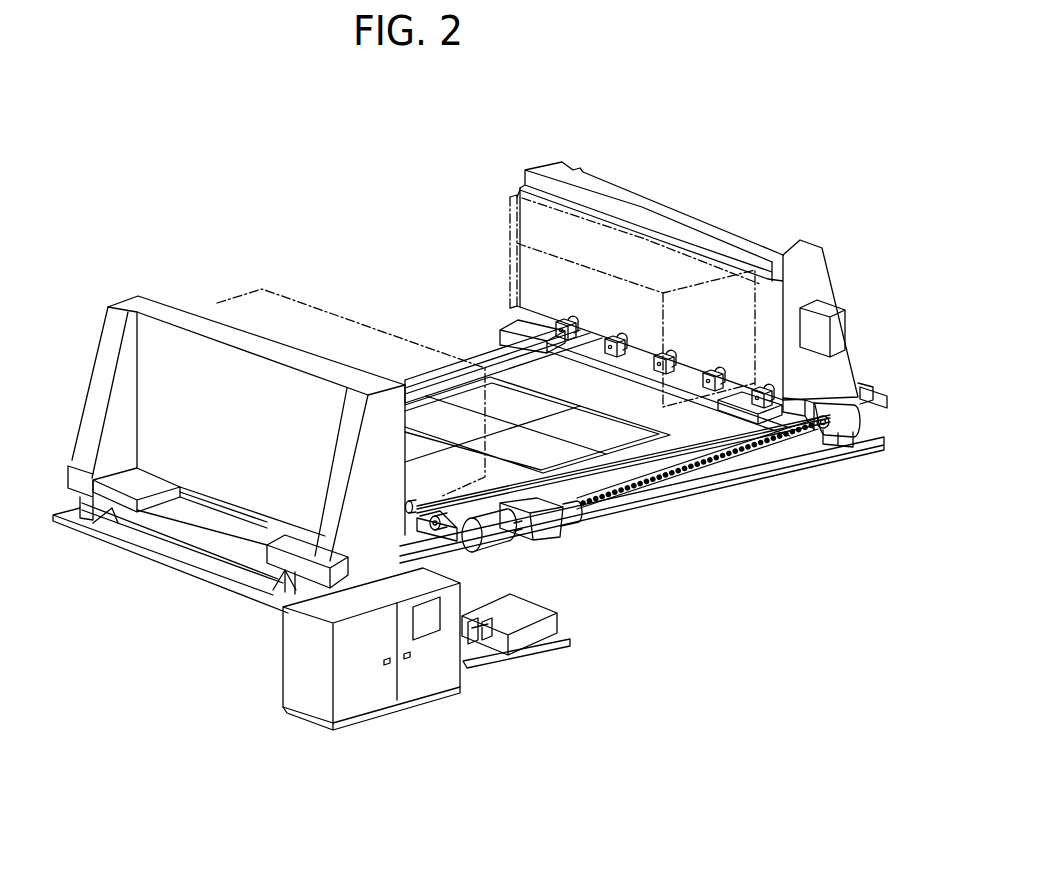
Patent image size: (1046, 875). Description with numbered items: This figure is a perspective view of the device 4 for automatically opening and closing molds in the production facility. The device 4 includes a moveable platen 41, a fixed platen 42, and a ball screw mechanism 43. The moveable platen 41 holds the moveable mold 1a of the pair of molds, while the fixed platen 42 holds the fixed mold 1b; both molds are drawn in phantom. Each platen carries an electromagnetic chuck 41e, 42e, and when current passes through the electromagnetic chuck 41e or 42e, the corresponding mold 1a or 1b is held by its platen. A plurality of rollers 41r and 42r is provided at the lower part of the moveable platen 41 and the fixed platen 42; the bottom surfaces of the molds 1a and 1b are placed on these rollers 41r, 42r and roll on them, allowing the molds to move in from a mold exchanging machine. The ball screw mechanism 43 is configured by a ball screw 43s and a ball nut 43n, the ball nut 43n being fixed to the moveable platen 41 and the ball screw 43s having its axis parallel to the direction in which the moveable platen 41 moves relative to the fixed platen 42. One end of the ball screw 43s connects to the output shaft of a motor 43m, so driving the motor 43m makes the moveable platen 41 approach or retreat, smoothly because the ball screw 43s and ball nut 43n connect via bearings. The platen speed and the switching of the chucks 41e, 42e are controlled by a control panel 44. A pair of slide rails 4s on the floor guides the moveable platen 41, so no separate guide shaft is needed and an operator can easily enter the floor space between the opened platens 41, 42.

The device for automatically opening and closing molds 4 is at (234, 118).
The slide rails 4s is at (470, 343).
The mold (moveable mold) 1a is at (508, 197).
The mold (fixed mold) 1b is at (288, 292).
The moveable platen 41 is at (652, 261).
The electromagnetic chuck 41e is at (536, 186).
The rollers 41r is at (570, 322).
The fixed platen 42 is at (236, 412).
The electromagnetic chuck 42e is at (213, 300).
The rollers 42r is at (443, 533).
The ball screw mechanism 43 is at (664, 487).
The ball screw 43s is at (632, 482).
The motor 43m is at (492, 535).
The ball nut 43n is at (848, 437).
The control panel 44 is at (266, 686).